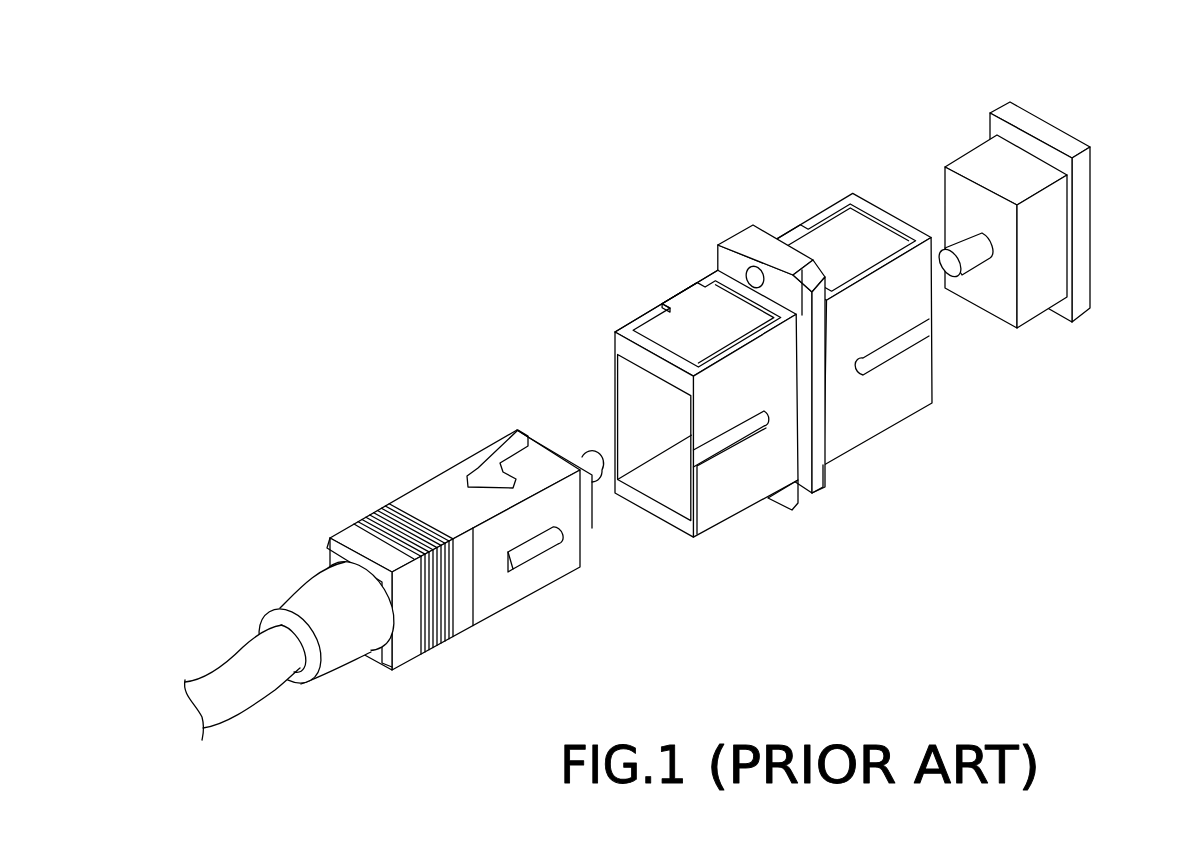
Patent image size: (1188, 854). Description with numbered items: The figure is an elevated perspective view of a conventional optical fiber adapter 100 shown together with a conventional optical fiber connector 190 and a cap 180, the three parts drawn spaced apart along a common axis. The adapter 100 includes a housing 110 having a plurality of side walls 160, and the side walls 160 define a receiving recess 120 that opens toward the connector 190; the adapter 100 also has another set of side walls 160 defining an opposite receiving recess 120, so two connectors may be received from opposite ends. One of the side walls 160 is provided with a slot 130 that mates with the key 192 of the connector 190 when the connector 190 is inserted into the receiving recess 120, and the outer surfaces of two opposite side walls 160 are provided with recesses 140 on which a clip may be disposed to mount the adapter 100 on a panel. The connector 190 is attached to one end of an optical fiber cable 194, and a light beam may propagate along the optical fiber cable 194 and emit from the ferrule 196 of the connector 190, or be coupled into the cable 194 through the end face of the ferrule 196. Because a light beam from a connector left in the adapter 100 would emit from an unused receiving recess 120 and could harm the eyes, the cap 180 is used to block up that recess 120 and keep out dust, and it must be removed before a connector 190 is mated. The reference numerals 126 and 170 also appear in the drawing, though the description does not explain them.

The optical fiber adapter 100 is at (683, 150).
The housing 110 is at (611, 305).
The receiving recess 120 is at (650, 460).
The adapter front end 126 is at (616, 345).
The slot 130 is at (898, 338).
The recesses 140 is at (712, 303).
The side walls 160 is at (887, 216).
The mounting hole 170 is at (672, 288).
The cap 180 is at (1073, 130).
The optical fiber connector 190 is at (366, 472).
The key 192 is at (533, 553).
The optical fiber cable 194 is at (250, 663).
The ferrule 196 is at (588, 460).